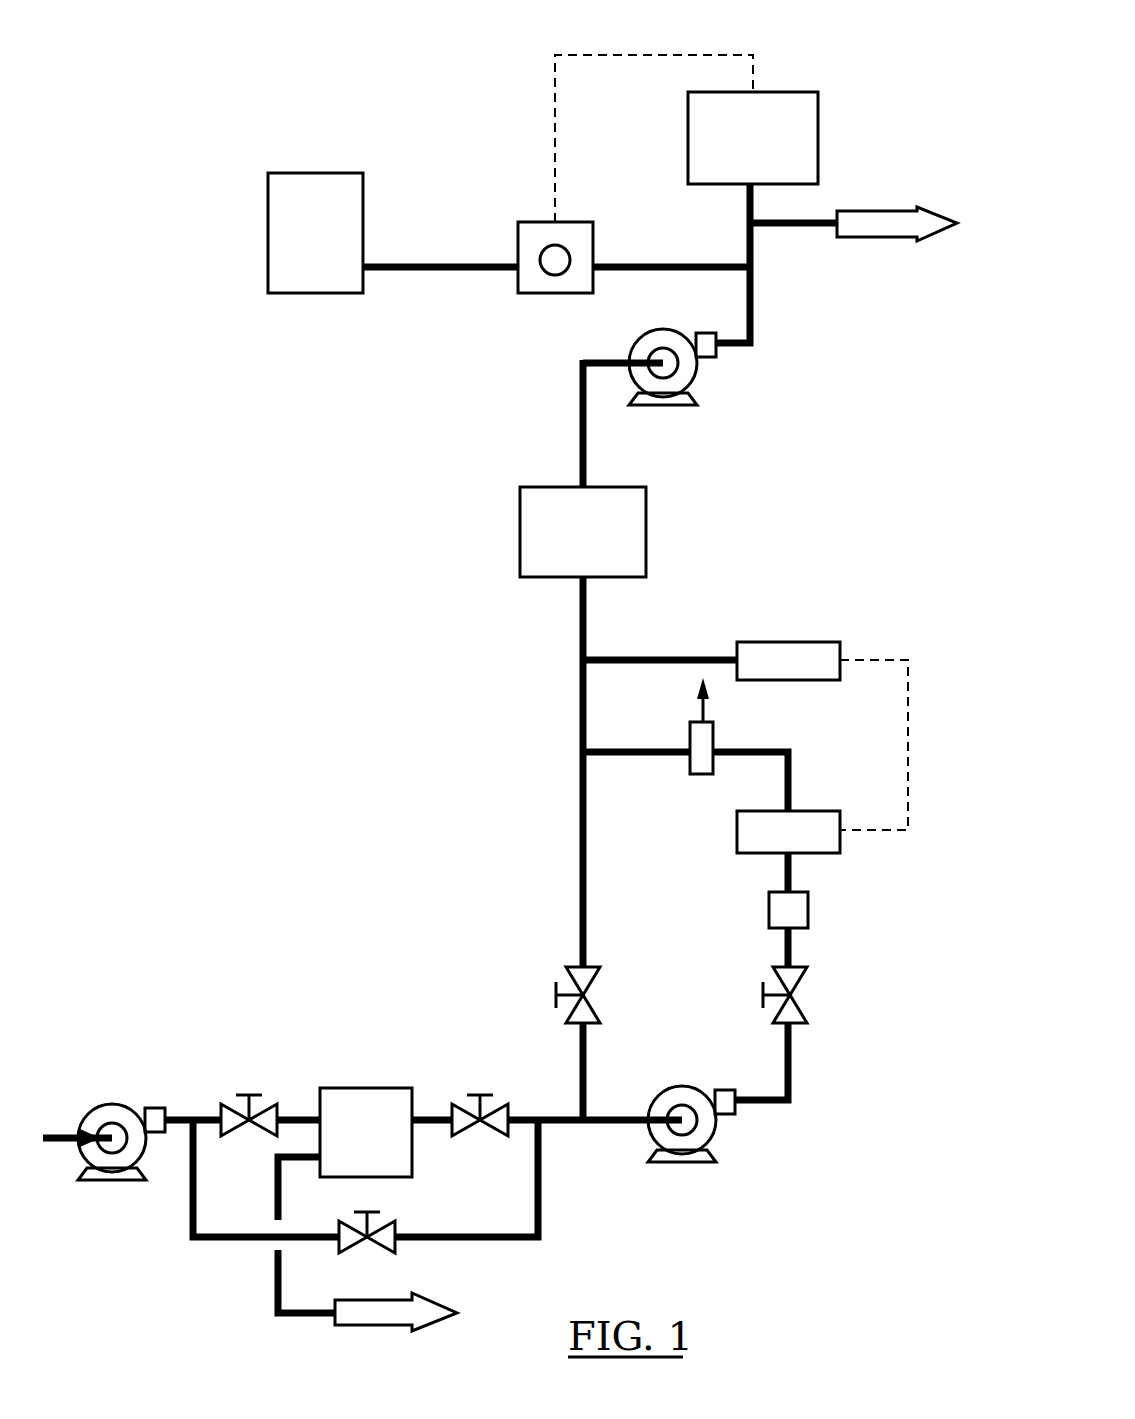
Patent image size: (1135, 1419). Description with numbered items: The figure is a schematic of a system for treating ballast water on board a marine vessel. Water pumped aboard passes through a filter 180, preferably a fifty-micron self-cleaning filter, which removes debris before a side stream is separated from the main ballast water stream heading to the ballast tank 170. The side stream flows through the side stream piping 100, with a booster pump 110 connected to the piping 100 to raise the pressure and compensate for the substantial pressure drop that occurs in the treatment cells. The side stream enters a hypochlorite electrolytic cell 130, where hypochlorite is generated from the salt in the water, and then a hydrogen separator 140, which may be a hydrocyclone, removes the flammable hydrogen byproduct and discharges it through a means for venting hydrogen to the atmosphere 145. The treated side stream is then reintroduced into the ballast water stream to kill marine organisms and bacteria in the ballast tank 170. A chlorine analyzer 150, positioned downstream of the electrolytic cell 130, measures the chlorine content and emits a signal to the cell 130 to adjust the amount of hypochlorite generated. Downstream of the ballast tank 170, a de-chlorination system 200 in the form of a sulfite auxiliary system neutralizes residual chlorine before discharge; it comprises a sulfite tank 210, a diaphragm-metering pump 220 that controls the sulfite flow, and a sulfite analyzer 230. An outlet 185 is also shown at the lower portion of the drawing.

The side stream piping 100 is at (617, 1125).
The booster pump 110 is at (693, 1160).
The hypochlorite electrolytic cell 130 is at (737, 835).
The hydrogen separator 140 is at (715, 735).
The means for venting hydrogen to the atmosphere 145 is at (710, 703).
The chlorine analyzer 150 is at (785, 642).
The ballast tank 170 is at (647, 507).
The filter 180 is at (380, 1088).
The outlet 185 is at (458, 1312).
The de-chlorination system 200 is at (467, 89).
The sulfite tank 210 is at (302, 173).
The pump 220 is at (585, 222).
The sulfite analyzer 230 is at (788, 92).